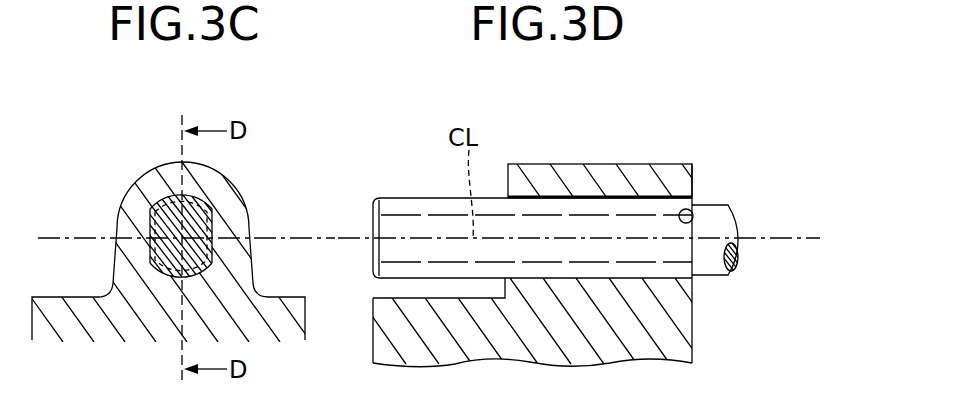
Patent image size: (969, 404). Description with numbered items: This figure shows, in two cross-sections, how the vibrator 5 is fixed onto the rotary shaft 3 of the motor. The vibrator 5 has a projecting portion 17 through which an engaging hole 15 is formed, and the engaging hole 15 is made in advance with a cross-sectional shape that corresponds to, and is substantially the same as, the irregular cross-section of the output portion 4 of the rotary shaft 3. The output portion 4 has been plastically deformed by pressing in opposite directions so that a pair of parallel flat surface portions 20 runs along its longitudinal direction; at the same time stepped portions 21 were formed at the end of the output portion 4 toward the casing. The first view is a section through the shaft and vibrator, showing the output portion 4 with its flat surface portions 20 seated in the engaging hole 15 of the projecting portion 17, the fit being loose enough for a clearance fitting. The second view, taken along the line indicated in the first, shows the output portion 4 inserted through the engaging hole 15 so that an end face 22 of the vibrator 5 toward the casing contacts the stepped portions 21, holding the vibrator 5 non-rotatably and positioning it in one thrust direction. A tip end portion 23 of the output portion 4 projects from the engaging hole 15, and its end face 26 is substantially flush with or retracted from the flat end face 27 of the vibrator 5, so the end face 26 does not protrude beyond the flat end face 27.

In FIG. 3C, the rotary shaft 3 is at (226, 254).
In FIG. 3D, the rotary shaft 3 is at (723, 201).
In FIG. 3C, the output portion 4 is at (202, 279).
In FIG. 3D, the output portion 4 is at (647, 207).
In FIG. 3C, the vibrator 5 is at (277, 297).
In FIG. 3D, the vibrator 5 is at (699, 338).
In FIG. 3C, the engaging hole 15 is at (185, 200).
In FIG. 3D, the engaging hole 15 is at (588, 207).
In FIG. 3C, the projecting portion 17 is at (245, 205).
In FIG. 3D, the projecting portion 17 is at (565, 163).
In FIG. 3C, the flat surface portion 20 is at (215, 233).
In FIG. 3D, the flat surface portion 20 is at (582, 247).
In FIG. 3D, the stepped portion 21 is at (692, 209).
In FIG. 3D, the end face 22 is at (694, 303).
In FIG. 3D, the tip end portion 23 is at (413, 197).
In FIG. 3D, the end face 26 is at (372, 222).
In FIG. 3D, the flat end face 27 is at (372, 342).